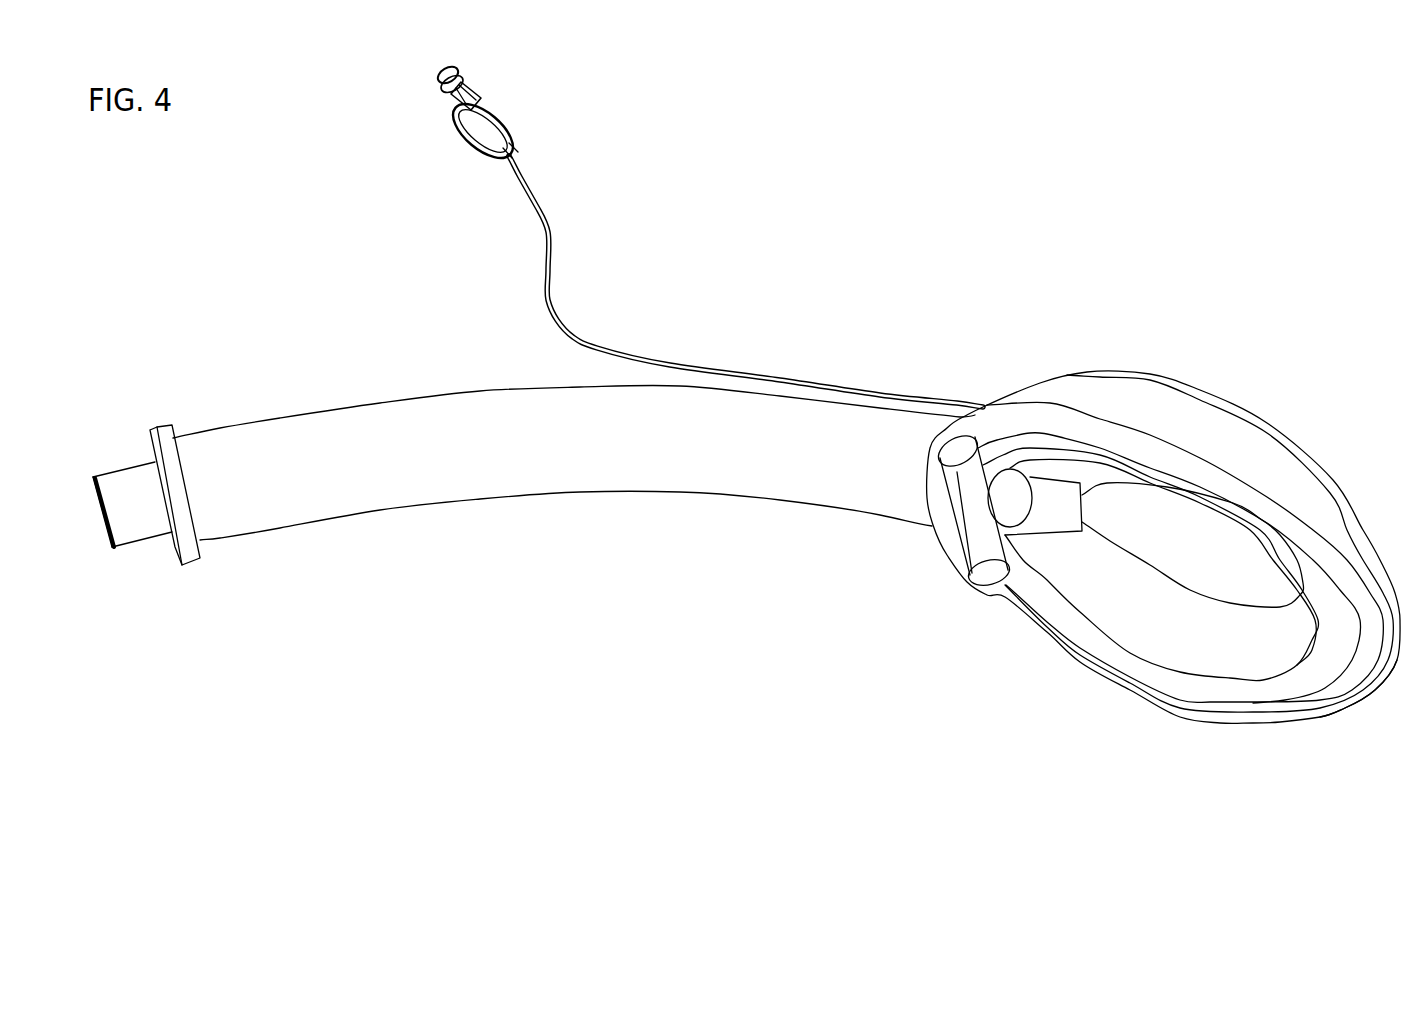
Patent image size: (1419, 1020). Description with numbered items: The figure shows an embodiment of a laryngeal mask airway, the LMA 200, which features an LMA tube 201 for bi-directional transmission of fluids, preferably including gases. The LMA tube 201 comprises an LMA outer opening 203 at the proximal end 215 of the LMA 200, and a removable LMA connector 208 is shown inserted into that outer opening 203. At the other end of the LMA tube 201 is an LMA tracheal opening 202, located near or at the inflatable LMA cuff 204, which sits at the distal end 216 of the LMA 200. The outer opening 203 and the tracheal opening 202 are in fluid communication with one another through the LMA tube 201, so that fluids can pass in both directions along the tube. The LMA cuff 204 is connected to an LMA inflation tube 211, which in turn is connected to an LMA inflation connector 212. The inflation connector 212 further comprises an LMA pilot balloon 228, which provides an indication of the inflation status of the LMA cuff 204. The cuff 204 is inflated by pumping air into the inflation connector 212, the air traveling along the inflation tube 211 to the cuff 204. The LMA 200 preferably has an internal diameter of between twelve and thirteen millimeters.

The LMA 200 is at (752, 270).
The LMA tube 201 is at (387, 400).
The LMA tracheal opening 202 is at (1013, 503).
The LMA outer opening 203 is at (187, 490).
The LMA cuff 204 is at (1128, 388).
The LMA connector 208 is at (153, 520).
The LMA inflation tube 211 is at (794, 380).
The LMA inflation connector 212 is at (457, 66).
The proximal end of LMA 215 is at (125, 573).
The distal end of LMA 216 is at (1338, 746).
The LMA pilot balloon 228 is at (510, 130).